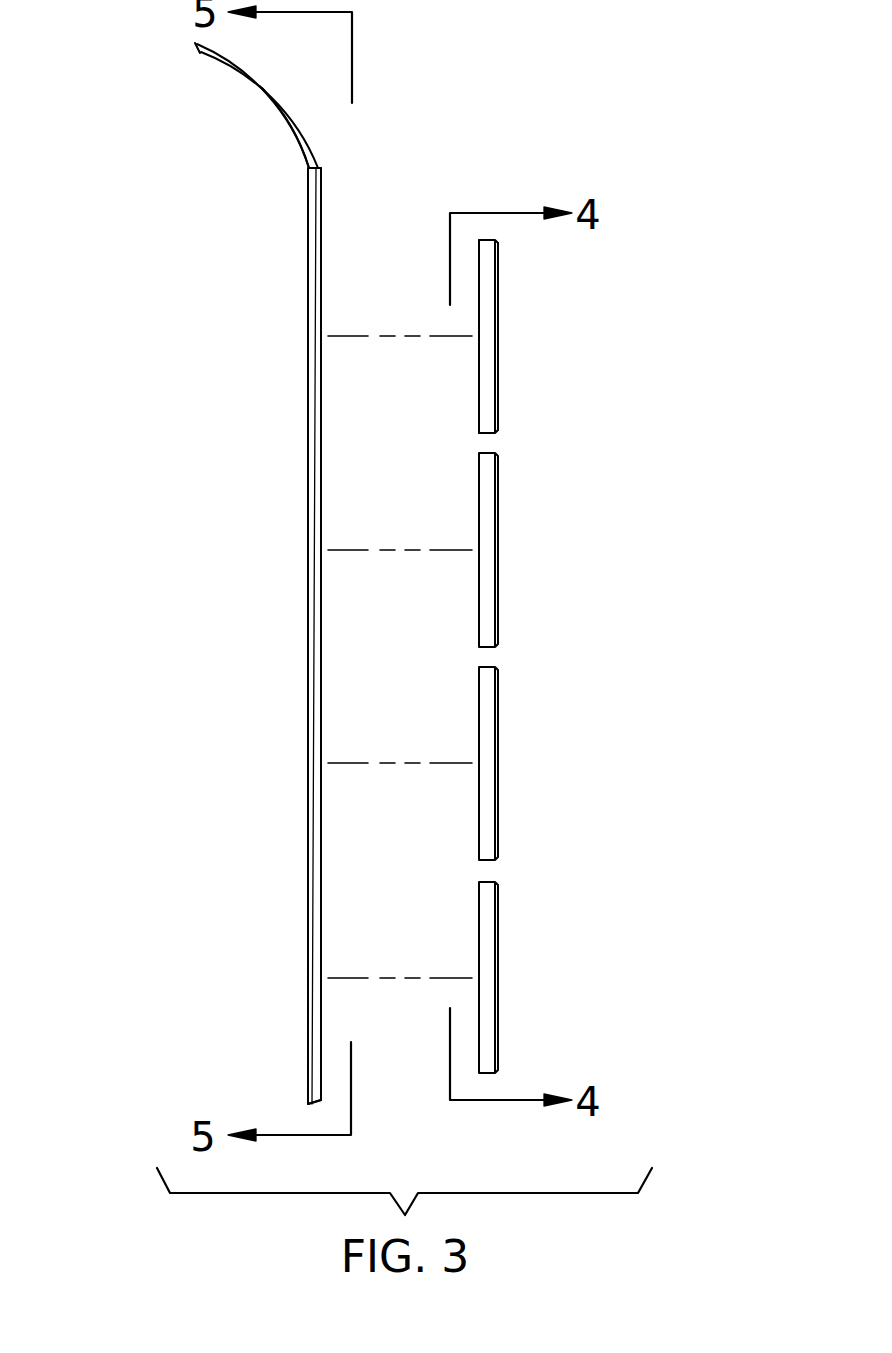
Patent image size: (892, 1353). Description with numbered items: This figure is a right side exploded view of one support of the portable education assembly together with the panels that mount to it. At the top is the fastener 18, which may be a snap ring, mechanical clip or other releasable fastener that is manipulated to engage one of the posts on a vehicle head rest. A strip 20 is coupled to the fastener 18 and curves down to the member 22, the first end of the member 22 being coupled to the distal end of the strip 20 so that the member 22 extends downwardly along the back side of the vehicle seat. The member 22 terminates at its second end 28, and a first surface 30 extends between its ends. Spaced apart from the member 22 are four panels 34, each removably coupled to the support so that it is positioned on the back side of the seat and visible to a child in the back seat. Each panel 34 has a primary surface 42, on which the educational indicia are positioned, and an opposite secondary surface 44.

The fastener 18 is at (199, 50).
The strip 20 is at (298, 131).
The member 22 is at (308, 189).
The second end 28 is at (316, 1104).
The first surface 30 is at (321, 228).
The panels 34 is at (488, 543).
The primary surface 42 is at (498, 290).
The secondary surface 44 is at (479, 315).